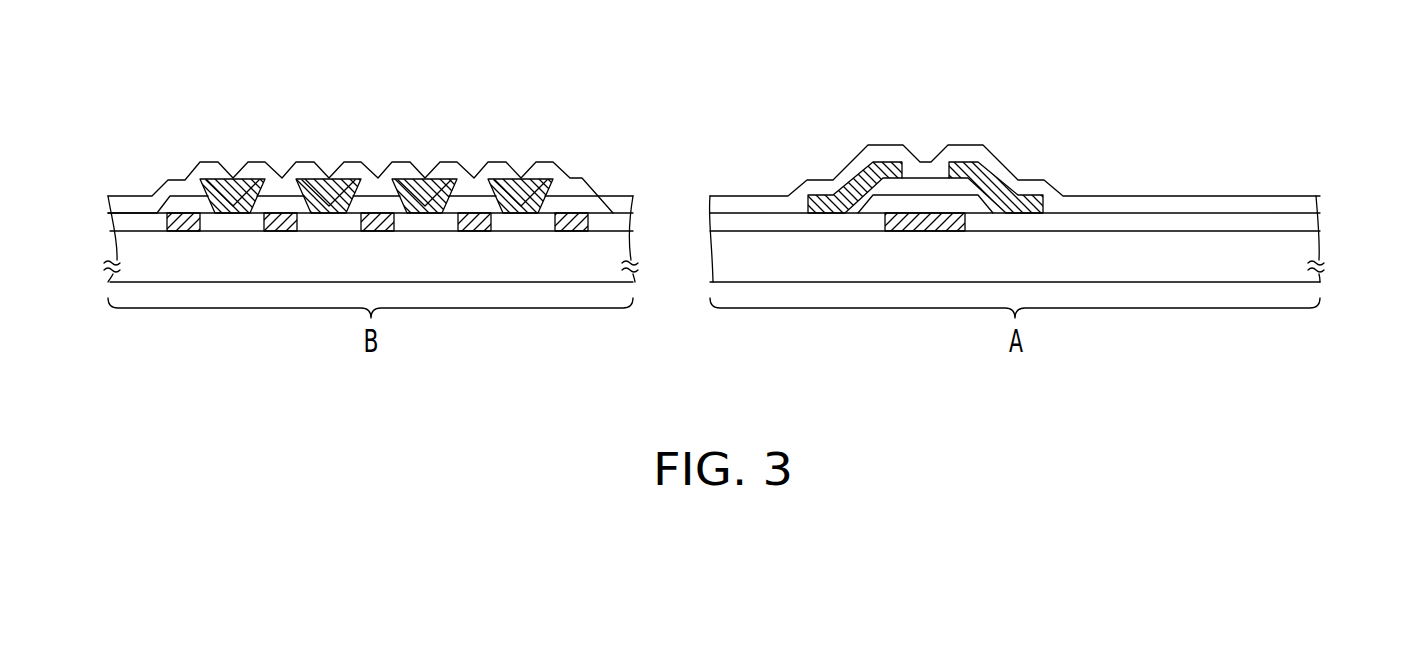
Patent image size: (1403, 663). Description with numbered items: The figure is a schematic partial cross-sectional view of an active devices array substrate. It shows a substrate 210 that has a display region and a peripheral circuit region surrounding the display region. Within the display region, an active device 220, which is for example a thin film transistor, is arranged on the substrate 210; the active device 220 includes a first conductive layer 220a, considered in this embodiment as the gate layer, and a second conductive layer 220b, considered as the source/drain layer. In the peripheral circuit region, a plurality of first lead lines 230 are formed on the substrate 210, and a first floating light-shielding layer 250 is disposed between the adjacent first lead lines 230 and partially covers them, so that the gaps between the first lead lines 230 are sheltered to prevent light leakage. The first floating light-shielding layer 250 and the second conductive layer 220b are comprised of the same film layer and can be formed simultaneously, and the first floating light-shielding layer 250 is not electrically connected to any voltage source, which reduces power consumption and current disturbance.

The substrate 210 is at (128, 248).
The active device 220 is at (941, 123).
The first conductive layer 220a is at (924, 222).
The second conductive layer 220b is at (832, 202).
The first lead line 230 is at (457, 222).
The first floating light-shielding layer 250 is at (498, 192).